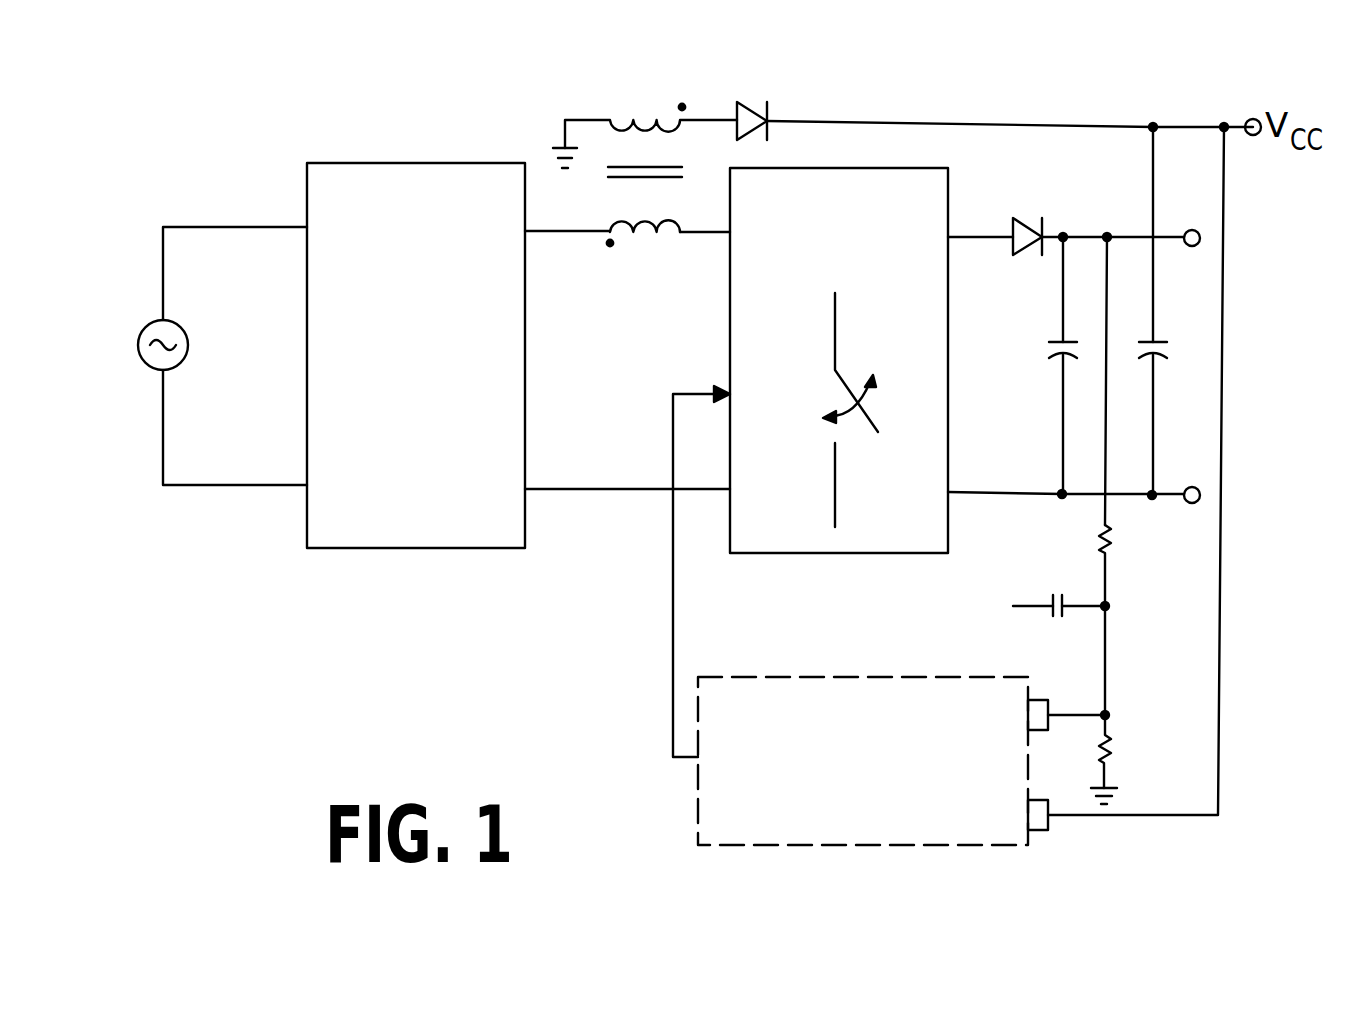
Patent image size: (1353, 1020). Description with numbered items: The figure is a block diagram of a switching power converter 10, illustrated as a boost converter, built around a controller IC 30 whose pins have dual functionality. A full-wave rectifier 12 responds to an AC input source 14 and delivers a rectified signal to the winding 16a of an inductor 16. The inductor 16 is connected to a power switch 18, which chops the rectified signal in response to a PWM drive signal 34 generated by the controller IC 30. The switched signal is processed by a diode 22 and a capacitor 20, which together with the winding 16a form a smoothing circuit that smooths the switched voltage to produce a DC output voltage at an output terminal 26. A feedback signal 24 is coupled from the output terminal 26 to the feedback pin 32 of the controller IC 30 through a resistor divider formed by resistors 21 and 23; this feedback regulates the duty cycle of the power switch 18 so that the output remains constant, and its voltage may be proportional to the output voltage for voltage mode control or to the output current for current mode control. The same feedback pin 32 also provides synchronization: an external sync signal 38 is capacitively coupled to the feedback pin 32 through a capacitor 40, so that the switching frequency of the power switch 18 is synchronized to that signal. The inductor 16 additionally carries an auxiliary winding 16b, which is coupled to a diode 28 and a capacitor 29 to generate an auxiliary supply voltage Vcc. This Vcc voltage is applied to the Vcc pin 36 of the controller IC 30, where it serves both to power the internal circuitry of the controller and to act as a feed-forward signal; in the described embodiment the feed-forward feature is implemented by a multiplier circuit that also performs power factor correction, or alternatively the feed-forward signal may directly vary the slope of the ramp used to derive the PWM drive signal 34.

The switching power converter 10 is at (230, 118).
The full-wave rectifier 12 is at (422, 163).
The AC input source 14 is at (183, 320).
The inductor 16 is at (600, 176).
The winding 16a is at (641, 238).
The auxiliary winding 16b is at (639, 112).
The power switch 18 is at (900, 168).
The capacitor 20 is at (1052, 354).
The resistor 21 is at (1112, 538).
The diode 22 is at (1020, 215).
The resistor 23 is at (1110, 752).
The feedback signal 24 is at (1105, 278).
The output terminal 26 is at (1172, 235).
The diode 28 is at (745, 103).
The capacitor 29 is at (1167, 347).
The controller IC 30 is at (770, 676).
The feedback pin 32 is at (1050, 699).
The drive signal 34 is at (671, 599).
The Vcc pin 36 is at (1045, 832).
The sync signal 38 is at (1040, 614).
The capacitor 40 is at (1058, 592).